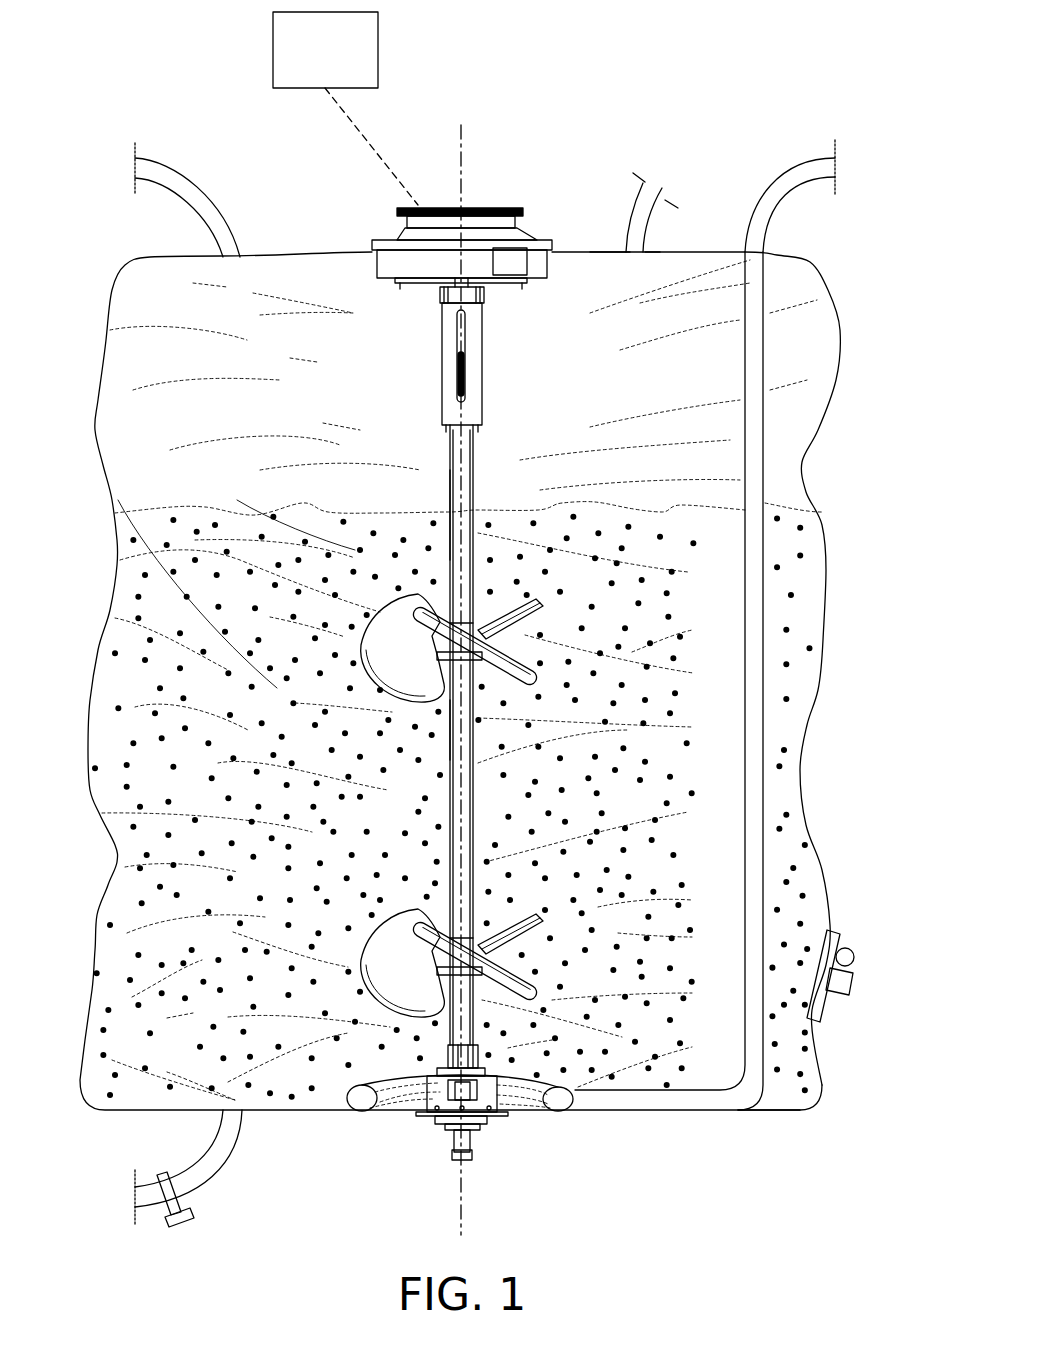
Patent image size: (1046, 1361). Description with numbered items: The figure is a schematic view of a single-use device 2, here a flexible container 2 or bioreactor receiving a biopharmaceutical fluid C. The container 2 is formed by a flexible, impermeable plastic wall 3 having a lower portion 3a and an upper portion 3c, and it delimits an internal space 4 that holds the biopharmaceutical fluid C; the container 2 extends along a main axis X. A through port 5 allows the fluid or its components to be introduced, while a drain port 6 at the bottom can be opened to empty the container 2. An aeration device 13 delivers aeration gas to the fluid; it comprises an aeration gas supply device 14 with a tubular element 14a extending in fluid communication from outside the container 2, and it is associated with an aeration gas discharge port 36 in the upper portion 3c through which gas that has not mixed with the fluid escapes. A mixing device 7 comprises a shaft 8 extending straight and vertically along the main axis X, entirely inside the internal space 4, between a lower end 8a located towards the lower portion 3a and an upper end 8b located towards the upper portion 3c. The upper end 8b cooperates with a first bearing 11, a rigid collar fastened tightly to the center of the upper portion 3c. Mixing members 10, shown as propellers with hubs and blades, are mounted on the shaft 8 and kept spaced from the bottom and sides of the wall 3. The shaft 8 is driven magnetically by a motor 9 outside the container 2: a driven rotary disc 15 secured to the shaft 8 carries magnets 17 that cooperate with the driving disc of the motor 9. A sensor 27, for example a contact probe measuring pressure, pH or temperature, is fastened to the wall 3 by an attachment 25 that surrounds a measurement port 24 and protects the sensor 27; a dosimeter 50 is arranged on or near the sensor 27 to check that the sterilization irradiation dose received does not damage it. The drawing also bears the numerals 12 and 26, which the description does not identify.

The single-use device 2 is at (695, 230).
The wall 3 is at (805, 490).
The lower portion 3a is at (762, 1112).
The upper portion 3c is at (720, 252).
The internal space 4 is at (708, 740).
The through port 5 is at (208, 205).
The drain port 6 is at (205, 1165).
The mixing device 7 is at (495, 432).
The shaft 8 is at (458, 515).
The lower end 8a is at (397, 1080).
The upper end 8b is at (405, 310).
The motor 9 is at (273, 38).
The mixing member 10 is at (390, 626).
The first bearing 11 is at (545, 205).
The bottom bearing 12 is at (420, 1150).
The aeration device 13 is at (562, 1100).
The aeration gas supply device 14 is at (755, 545).
The tubular element 14a is at (790, 200).
The driven rotary disc 15 is at (402, 262).
The magnets 17 is at (515, 258).
The measurement port 24 is at (472, 735).
The attachment 25 is at (448, 378).
The sensor sleeve 26 is at (415, 420).
The sensor 27 is at (837, 988).
The aeration gas discharge port 36 is at (662, 180).
The dosimeter 50 is at (845, 957).
The biopharmaceutical fluid C is at (158, 790).
The main axis X is at (458, 146).